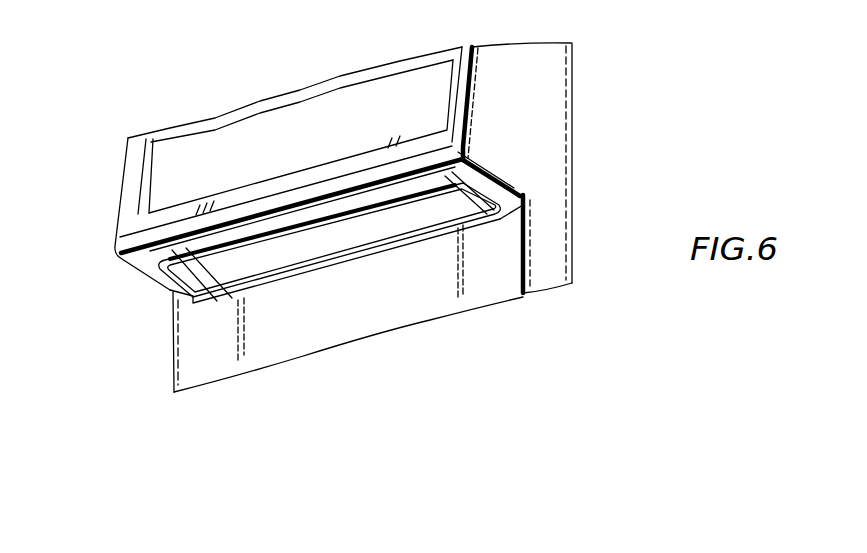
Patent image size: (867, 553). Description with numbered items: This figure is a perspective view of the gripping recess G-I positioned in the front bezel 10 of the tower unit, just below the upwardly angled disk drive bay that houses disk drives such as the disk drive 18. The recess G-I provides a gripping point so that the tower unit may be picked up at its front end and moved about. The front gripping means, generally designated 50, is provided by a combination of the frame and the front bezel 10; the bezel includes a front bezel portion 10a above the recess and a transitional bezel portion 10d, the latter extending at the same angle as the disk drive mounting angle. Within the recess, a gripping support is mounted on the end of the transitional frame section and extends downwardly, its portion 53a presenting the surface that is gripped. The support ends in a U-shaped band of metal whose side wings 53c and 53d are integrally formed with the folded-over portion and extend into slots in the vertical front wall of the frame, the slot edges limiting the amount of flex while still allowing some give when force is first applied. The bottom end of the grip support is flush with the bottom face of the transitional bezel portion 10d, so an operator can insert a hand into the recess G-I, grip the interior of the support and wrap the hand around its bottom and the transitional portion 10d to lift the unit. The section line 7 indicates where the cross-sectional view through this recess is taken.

The section line 7- 7 is at (274, 80).
The disk drive 18 is at (259, 166).
The front bezel portion 10a is at (468, 72).
The transitional bezel portion 10d is at (497, 176).
The front bezel 10 is at (562, 257).
The front gripping means 50 is at (125, 279).
The gripping support portion 53a is at (337, 217).
The side wing 53c is at (220, 273).
The side wing 53d is at (478, 197).
The recess G-I is at (318, 263).